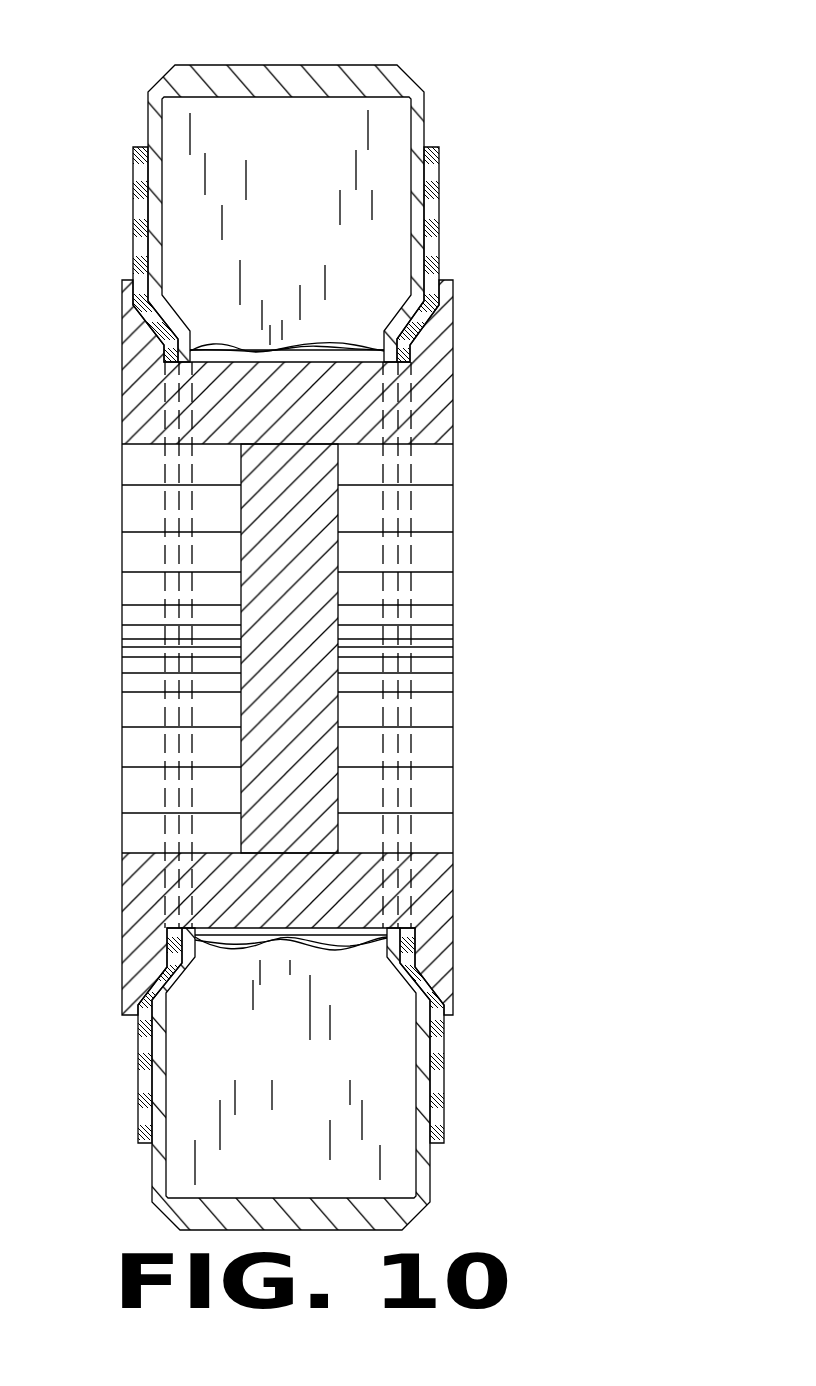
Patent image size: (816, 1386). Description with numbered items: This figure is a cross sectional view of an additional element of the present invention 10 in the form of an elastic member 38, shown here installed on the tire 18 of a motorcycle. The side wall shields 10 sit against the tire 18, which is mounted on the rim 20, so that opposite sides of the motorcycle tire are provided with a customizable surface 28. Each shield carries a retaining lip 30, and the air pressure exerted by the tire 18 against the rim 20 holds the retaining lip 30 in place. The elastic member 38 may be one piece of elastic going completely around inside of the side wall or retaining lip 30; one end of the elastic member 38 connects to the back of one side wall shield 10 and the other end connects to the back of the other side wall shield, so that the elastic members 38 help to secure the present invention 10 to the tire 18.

The side wall shield 10 is at (323, 194).
The tire 18 is at (387, 65).
The rim 20 is at (453, 392).
The customizable surface 28 is at (136, 246).
The retaining lip 30 is at (174, 966).
The elastic member 38 is at (236, 345).